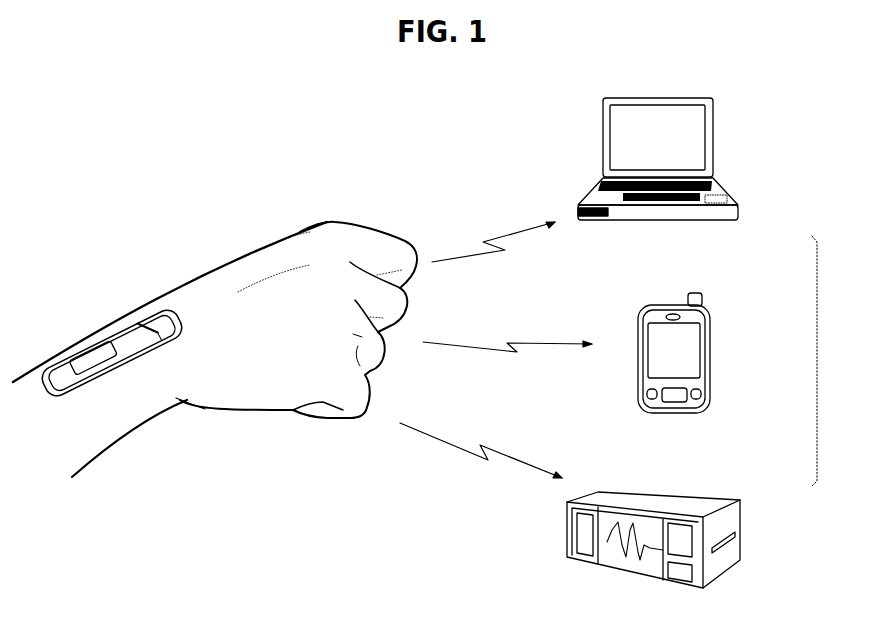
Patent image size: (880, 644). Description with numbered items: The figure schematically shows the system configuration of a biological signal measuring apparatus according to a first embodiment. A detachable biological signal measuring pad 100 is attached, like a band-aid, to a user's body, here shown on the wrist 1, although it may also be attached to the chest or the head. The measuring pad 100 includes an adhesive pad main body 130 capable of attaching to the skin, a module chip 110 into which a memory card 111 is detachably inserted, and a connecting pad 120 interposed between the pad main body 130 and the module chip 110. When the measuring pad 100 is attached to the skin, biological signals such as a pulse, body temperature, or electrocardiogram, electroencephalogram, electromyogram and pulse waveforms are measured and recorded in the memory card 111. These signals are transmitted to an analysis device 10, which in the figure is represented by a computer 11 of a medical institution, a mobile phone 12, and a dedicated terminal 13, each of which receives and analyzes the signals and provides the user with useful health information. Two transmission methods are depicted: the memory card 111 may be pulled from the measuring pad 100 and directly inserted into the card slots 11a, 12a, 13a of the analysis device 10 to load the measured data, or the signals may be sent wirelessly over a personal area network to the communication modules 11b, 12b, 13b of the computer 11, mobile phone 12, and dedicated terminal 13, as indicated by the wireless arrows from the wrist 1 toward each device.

The wrist 1 is at (185, 422).
The biological signal measuring pad 100 is at (94, 355).
The module chip 110 is at (120, 330).
The memory card 111 is at (90, 346).
The connecting pad 120 is at (52, 356).
The pad main body 130 is at (153, 308).
The analysis device 10 is at (817, 360).
The computer 11 is at (693, 182).
The card slot 11a is at (595, 222).
The communication module 11b is at (713, 198).
The mobile phone 12 is at (697, 345).
The card slot 12a is at (640, 348).
The communication module 12b is at (690, 315).
The dedicated terminal 13 is at (679, 542).
The card slot 13a is at (740, 541).
The communication module 13b is at (583, 550).